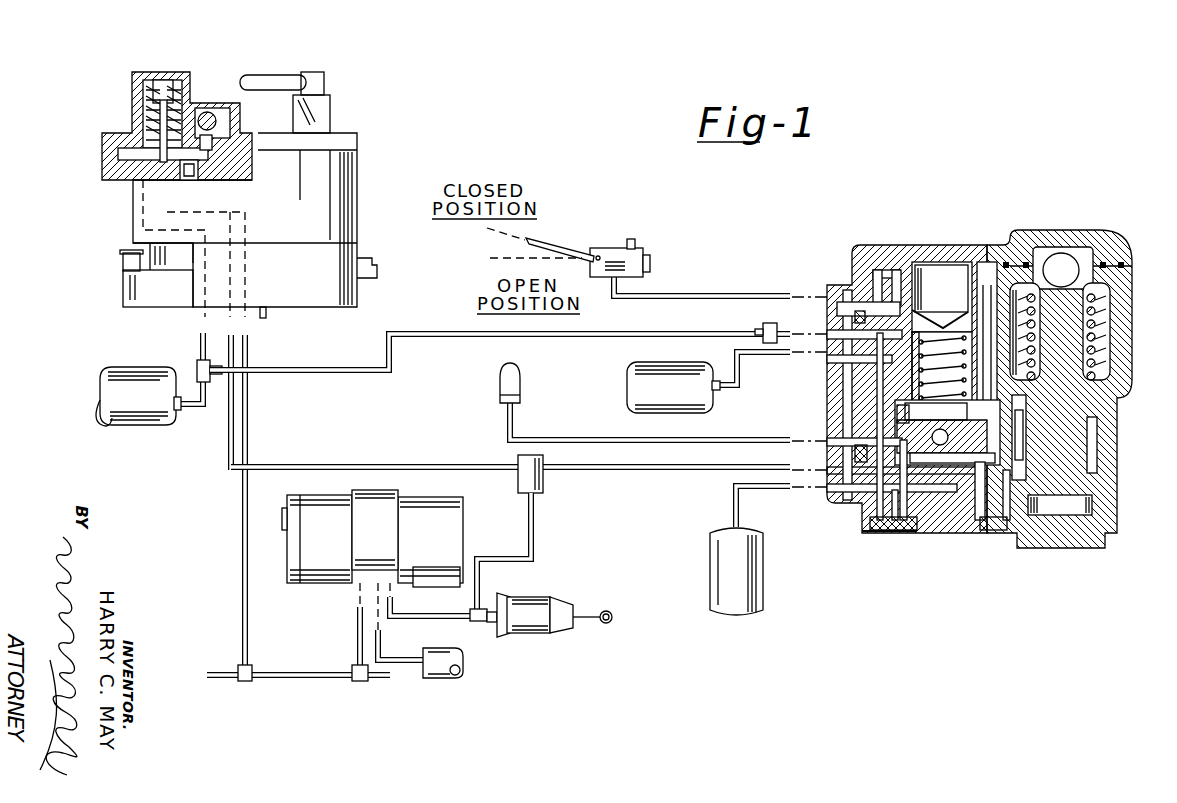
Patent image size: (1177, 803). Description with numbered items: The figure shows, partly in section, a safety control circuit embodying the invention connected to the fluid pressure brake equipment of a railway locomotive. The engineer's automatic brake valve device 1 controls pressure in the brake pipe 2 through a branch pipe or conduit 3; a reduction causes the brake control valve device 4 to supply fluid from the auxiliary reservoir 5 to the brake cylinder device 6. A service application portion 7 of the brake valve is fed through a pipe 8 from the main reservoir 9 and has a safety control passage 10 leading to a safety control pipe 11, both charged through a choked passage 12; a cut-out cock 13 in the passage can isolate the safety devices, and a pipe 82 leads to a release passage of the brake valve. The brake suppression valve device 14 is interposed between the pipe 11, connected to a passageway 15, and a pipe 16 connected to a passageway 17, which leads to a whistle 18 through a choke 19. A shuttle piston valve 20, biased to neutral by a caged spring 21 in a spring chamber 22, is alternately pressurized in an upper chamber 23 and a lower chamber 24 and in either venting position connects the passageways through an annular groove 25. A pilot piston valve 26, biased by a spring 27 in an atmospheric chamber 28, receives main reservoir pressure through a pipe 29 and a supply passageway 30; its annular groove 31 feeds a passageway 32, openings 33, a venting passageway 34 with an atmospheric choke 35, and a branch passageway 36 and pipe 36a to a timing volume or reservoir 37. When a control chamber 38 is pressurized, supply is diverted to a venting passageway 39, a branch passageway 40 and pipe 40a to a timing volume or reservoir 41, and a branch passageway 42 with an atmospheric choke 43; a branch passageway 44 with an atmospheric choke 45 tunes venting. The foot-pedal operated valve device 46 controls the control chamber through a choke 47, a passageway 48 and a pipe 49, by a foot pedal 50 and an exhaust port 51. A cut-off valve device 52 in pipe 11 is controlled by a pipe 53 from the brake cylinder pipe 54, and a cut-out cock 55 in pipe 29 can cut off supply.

The engineer's automatic brake valve device 1 is at (366, 183).
The brake pipe 2 is at (300, 675).
The branch pipe or conduit 3 is at (251, 433).
The brake control valve device 4 is at (468, 500).
The auxiliary reservoir 5 is at (463, 655).
The brake cylinder device 6 is at (538, 596).
The service application portion 7 is at (139, 63).
The pipe 8 is at (203, 350).
The main reservoir 9 is at (128, 376).
The safety control passage 10 is at (232, 284).
The safety control pipe 11 is at (358, 466).
The choked passage 12 is at (190, 177).
The cut-out cock 13 is at (218, 108).
The brake suppression valve device 14 is at (885, 234).
The passageway 15 is at (980, 474).
The pipe 16 is at (572, 440).
The passageway 17 is at (829, 443).
The whistle 18 is at (519, 378).
The choke 19 is at (856, 450).
The shuttle piston valve 20 is at (1088, 410).
The caged spring 21 is at (1102, 322).
The spring chamber 22 is at (1097, 345).
The upper chamber 23 is at (1095, 235).
The lower chamber 24 is at (1088, 505).
The annular groove 25 is at (1092, 440).
The pilot piston valve 26 is at (925, 266).
The spring 27 is at (951, 345).
The atmospheric chamber 28 is at (900, 413).
The pipe 29 is at (435, 335).
The supply passageway 30 is at (858, 342).
The annular groove 31 is at (920, 302).
The passageway 32 is at (992, 300).
The openings 33 is at (1063, 268).
The venting passageway 34 is at (1030, 475).
The atmospheric choke 35 is at (1005, 480).
The branch passageway 36 is at (957, 493).
The pipe 36a is at (777, 490).
The timing volume or reservoir 37 is at (764, 608).
The control chamber 38 is at (958, 270).
The venting passageway 39 is at (878, 393).
The branch passageway 40 is at (864, 357).
The pipe 40a is at (778, 355).
The timing volume or reservoir 41 is at (712, 407).
The branch passageway 42 is at (864, 515).
The atmospheric choke 43 is at (866, 527).
The branch passageway 44 is at (902, 500).
The atmospheric choke 45 is at (898, 502).
The foot-pedal operated valve device 46 is at (613, 240).
The choke 47 is at (855, 320).
The passageway 48 is at (858, 290).
The pipe 49 is at (766, 298).
The foot pedal 50 is at (558, 248).
The exhaust port 51 is at (636, 245).
The cut-off valve device 52 is at (545, 486).
The pipe 53 is at (530, 502).
The brake cylinder pipe 54 is at (430, 618).
The cut-out cock 55 is at (764, 326).
The pipe 82 is at (268, 312).